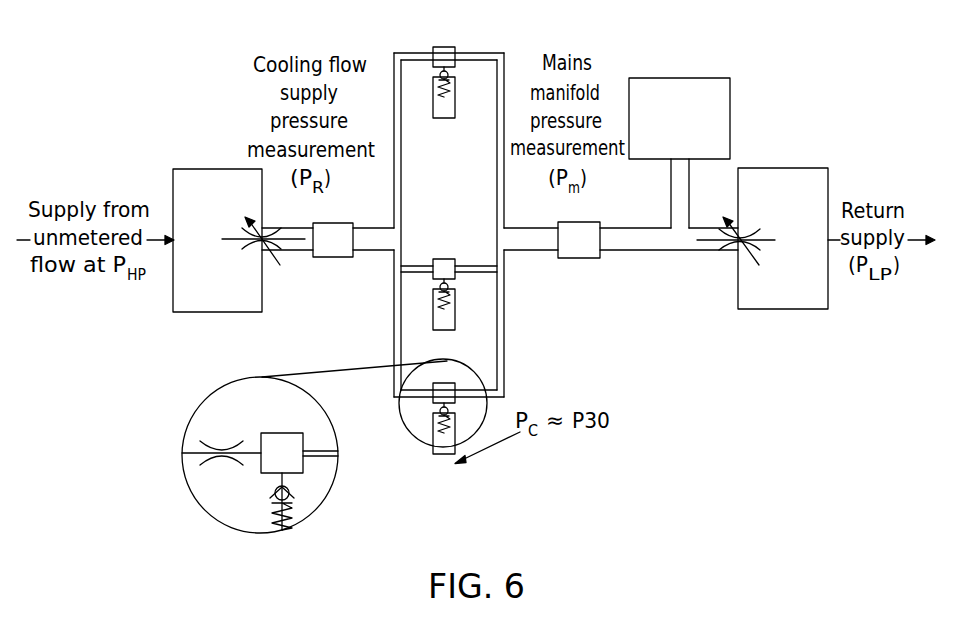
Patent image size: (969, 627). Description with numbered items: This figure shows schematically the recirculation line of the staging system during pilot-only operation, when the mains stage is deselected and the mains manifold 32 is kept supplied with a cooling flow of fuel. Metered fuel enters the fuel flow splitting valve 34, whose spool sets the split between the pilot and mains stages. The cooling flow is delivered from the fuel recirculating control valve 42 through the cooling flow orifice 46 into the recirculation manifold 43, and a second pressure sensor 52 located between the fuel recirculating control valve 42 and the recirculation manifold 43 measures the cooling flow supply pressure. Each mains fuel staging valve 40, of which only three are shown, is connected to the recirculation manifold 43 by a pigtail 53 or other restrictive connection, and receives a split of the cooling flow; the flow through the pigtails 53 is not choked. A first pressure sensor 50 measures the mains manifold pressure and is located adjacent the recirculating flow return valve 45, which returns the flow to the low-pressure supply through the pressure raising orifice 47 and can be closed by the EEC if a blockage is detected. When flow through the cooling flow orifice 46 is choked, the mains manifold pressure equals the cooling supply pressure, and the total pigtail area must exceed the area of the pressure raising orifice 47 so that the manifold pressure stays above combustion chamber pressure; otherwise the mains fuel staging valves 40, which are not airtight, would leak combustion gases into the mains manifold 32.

The mains manifold 32 is at (504, 72).
The fuel flow splitting valve 34 is at (697, 118).
The mains fuel staging valve 40 is at (455, 82).
The fuel recirculating control valve 42 is at (234, 208).
The recirculation manifold 43 is at (394, 72).
The recirculating flow return valve 45 is at (802, 205).
The cooling flow orifice 46 is at (243, 251).
The pressure raising orifice 47 is at (742, 236).
The first pressure sensor 50 is at (570, 195).
The second pressure sensor 52 is at (312, 199).
The pigtail 53 is at (216, 460).